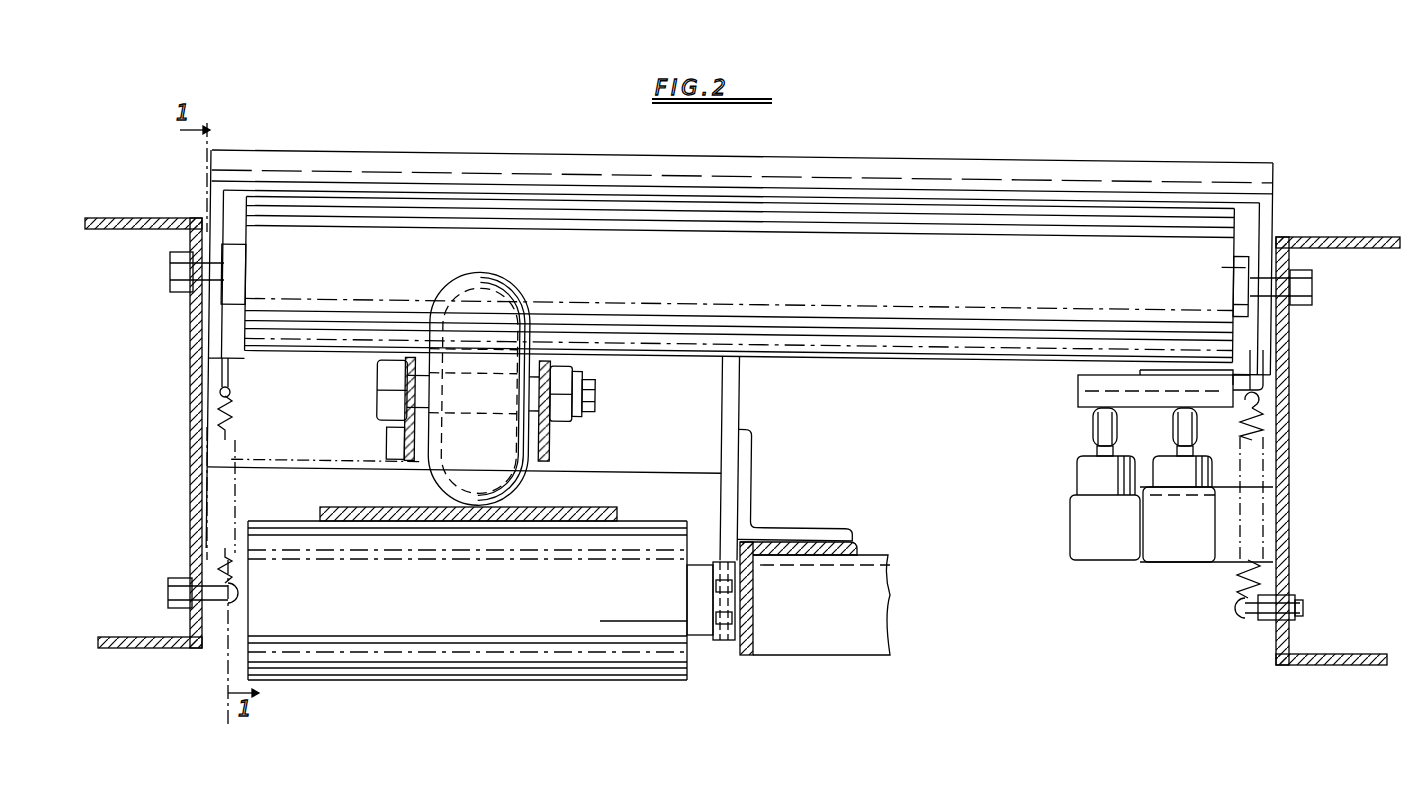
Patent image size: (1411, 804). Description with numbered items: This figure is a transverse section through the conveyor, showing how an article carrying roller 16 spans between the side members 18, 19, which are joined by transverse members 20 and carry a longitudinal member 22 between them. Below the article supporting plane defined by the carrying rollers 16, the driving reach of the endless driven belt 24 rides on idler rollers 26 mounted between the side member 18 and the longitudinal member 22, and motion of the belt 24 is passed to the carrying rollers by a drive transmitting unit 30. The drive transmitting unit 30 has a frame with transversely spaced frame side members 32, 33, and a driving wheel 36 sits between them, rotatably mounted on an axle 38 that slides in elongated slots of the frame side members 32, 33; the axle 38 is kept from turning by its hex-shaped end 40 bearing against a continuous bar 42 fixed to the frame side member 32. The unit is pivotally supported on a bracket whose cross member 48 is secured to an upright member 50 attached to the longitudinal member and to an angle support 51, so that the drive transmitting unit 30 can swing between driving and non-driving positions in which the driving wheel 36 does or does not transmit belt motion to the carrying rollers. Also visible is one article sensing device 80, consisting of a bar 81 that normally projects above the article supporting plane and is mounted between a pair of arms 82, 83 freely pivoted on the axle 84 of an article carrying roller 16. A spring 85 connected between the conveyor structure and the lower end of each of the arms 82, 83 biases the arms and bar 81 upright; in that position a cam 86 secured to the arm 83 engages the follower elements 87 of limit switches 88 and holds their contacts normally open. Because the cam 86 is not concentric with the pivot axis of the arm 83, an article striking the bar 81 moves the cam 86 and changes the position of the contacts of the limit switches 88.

The article carrying roller 16 is at (930, 362).
The side member 18 is at (190, 412).
The side member 19 is at (1290, 433).
The transverse member 20 is at (883, 551).
The longitudinal member 22 is at (755, 633).
The endless driven belt 24 is at (580, 509).
The idler roller 26 is at (520, 681).
The drive transmitting unit 30 is at (585, 428).
The frame side member 32 is at (395, 456).
The frame side member 33 is at (555, 453).
The driving wheel 36 is at (495, 270).
The axle 38 is at (598, 391).
The hex-shaped end 40 is at (380, 399).
The continuous bar 42 is at (392, 434).
The cross member 48 is at (258, 472).
The upright member 50 is at (745, 414).
The angle bracket 51 is at (760, 516).
The article sensing device 80 is at (900, 153).
The bar 81 is at (1085, 164).
The arm 82 is at (207, 213).
The arm 83 is at (1290, 220).
The axle 84 is at (170, 272).
The spring 85 is at (240, 408).
The cam 86 is at (1078, 388).
The follower element 87 is at (1095, 412).
The limit switch 88 is at (1150, 474).